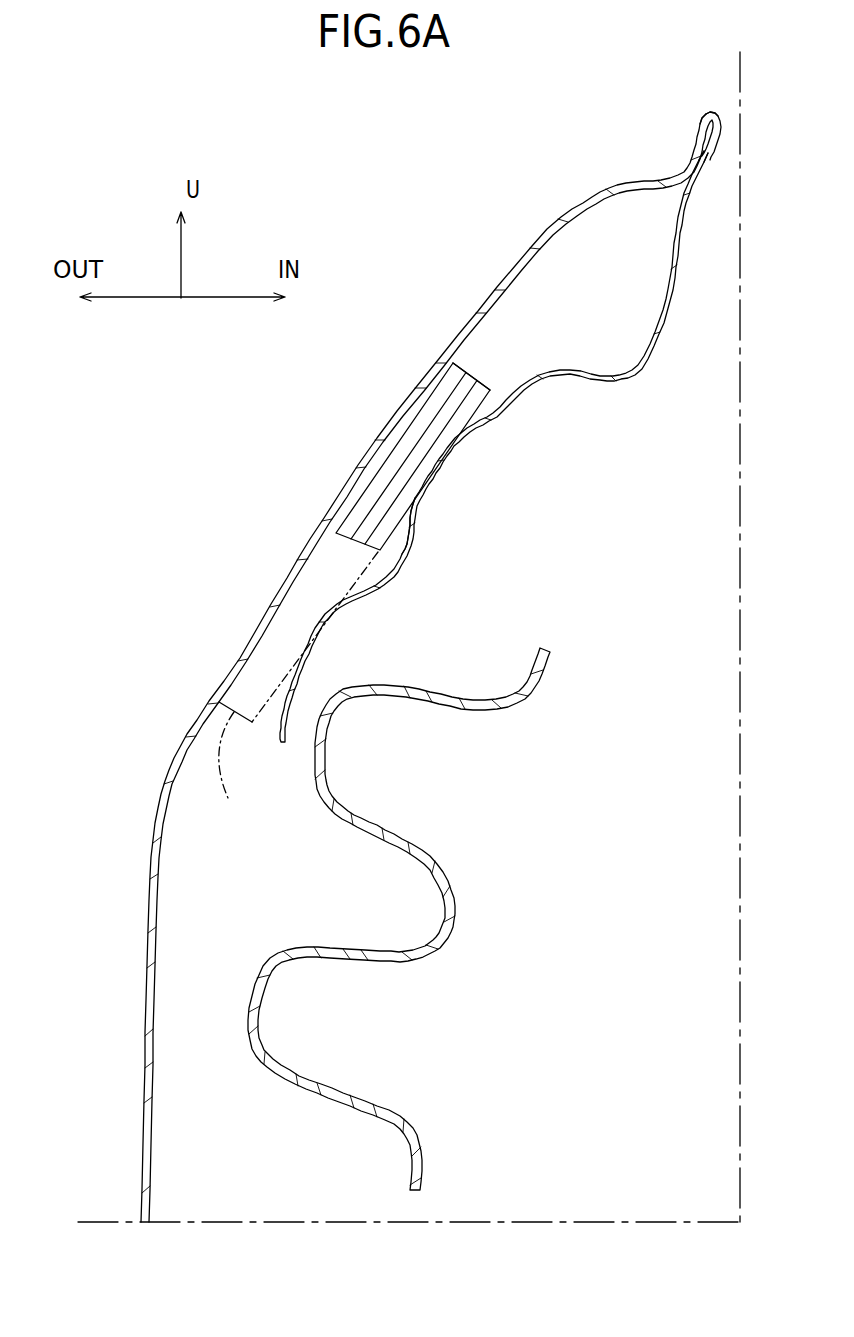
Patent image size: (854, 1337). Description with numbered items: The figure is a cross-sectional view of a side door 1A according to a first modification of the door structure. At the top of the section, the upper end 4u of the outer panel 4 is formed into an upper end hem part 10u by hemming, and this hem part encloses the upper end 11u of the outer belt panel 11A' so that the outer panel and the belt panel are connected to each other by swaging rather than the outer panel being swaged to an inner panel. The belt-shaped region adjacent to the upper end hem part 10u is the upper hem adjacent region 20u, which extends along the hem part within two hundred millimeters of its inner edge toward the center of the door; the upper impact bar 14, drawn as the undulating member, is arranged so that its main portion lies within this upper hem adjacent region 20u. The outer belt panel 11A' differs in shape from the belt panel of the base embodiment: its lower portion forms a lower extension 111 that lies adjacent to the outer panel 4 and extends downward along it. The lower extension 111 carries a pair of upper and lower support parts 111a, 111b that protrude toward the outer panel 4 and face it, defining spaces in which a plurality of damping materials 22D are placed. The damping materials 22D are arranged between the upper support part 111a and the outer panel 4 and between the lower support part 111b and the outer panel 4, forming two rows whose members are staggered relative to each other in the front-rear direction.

The side door 1A is at (395, 171).
The upper end hem part 10u is at (675, 117).
The upper end of the outer panel 4u is at (708, 115).
The upper end of the outer belt panel 11u is at (690, 128).
The upper hem adjacent region 20u is at (220, 589).
The outer belt panel 11A' is at (494, 446).
The damping materials 22D is at (470, 378).
The upper support part 111a is at (443, 453).
The outer panel 4 is at (358, 464).
The lower support part 111b is at (326, 612).
The lower extension 111 is at (405, 568).
The upper impact bar 14 is at (459, 935).